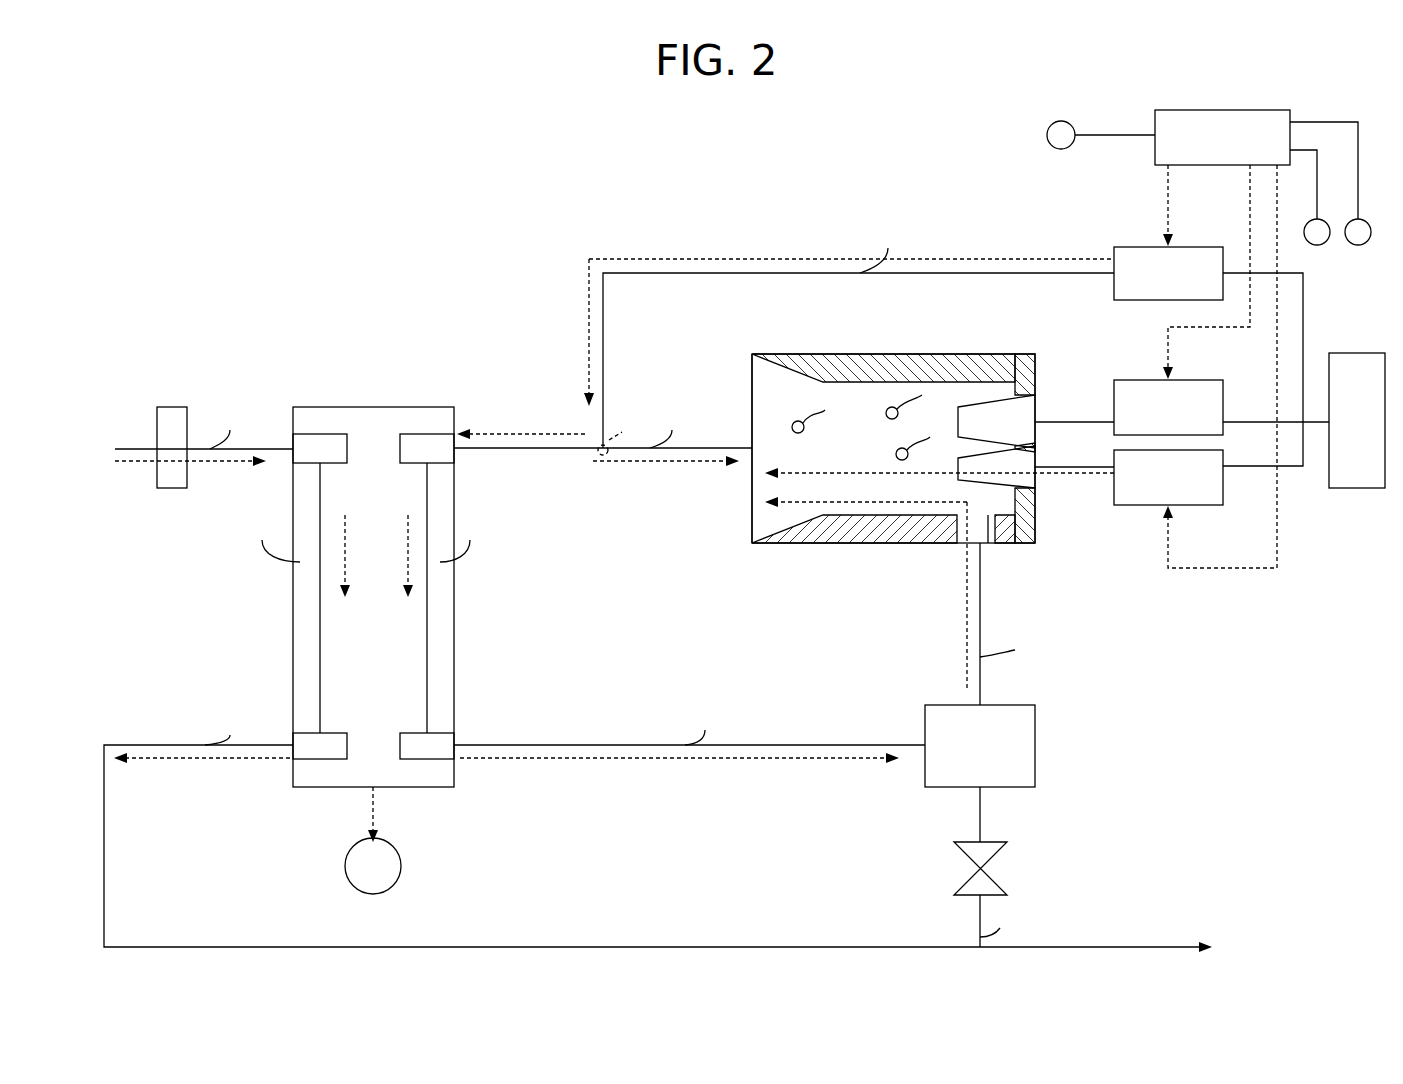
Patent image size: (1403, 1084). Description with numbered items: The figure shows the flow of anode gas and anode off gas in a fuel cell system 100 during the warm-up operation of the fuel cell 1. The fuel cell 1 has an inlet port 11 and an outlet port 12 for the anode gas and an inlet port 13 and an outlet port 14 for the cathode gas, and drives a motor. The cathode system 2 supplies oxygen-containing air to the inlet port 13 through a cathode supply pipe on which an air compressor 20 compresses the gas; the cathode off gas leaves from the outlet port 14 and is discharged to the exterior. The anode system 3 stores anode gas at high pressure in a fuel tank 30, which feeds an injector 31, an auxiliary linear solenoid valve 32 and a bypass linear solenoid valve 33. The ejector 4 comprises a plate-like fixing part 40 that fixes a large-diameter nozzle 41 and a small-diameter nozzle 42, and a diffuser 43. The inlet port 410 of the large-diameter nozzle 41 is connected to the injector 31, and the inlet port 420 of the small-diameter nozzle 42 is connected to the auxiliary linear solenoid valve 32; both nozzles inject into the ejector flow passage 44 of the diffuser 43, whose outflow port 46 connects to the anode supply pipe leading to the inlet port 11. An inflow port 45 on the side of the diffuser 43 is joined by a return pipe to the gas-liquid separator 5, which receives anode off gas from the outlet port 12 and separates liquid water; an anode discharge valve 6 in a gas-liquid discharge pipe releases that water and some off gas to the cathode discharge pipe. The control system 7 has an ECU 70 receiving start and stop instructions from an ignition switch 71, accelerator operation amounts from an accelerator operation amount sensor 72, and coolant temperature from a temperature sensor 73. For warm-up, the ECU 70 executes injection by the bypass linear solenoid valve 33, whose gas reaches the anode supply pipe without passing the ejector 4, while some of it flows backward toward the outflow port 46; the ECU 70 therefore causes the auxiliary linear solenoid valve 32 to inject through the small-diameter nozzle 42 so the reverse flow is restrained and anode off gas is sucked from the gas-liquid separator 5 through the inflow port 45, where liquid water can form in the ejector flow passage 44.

The fuel cell system 100 is at (300, 222).
The fuel cell 1 is at (374, 631).
The inlet port for the anode gas 11 is at (432, 436).
The outlet port for the anode gas 12 is at (436, 768).
The inlet port for the cathode gas 13 is at (305, 436).
The outlet port for the cathode gas 14 is at (312, 768).
The cathode system 2 is at (250, 343).
The air compressor 20 is at (180, 407).
The anode system 3 is at (955, 238).
The fuel tank 30 is at (1355, 353).
The injector 31 is at (1193, 380).
The auxiliary linear solenoid valve 32 is at (1223, 453).
The bypass linear solenoid valve 33 is at (1190, 247).
The ejector 4 is at (1082, 364).
The fixing part 40 is at (1020, 354).
The large-diameter nozzle 41 is at (1025, 384).
The inlet port of the large-diameter nozzle 410 is at (1035, 400).
The inlet port of the small-diameter nozzle 420 is at (1035, 452).
The small-diameter nozzle 42 is at (1025, 502).
The diffuser 43 is at (860, 354).
The ejector flow passage 44 is at (869, 417).
The inflow port 45 is at (990, 543).
The outflow port 46 is at (752, 395).
The gas-liquid separator 5 is at (1005, 705).
The anode discharge valve 6 is at (995, 842).
The control system 7 is at (1308, 108).
The ECU 70 is at (1265, 110).
The ignition switch 71 is at (1316, 218).
The accelerator operation amount sensor 72 is at (1358, 218).
The temperature sensor 73 is at (1068, 123).